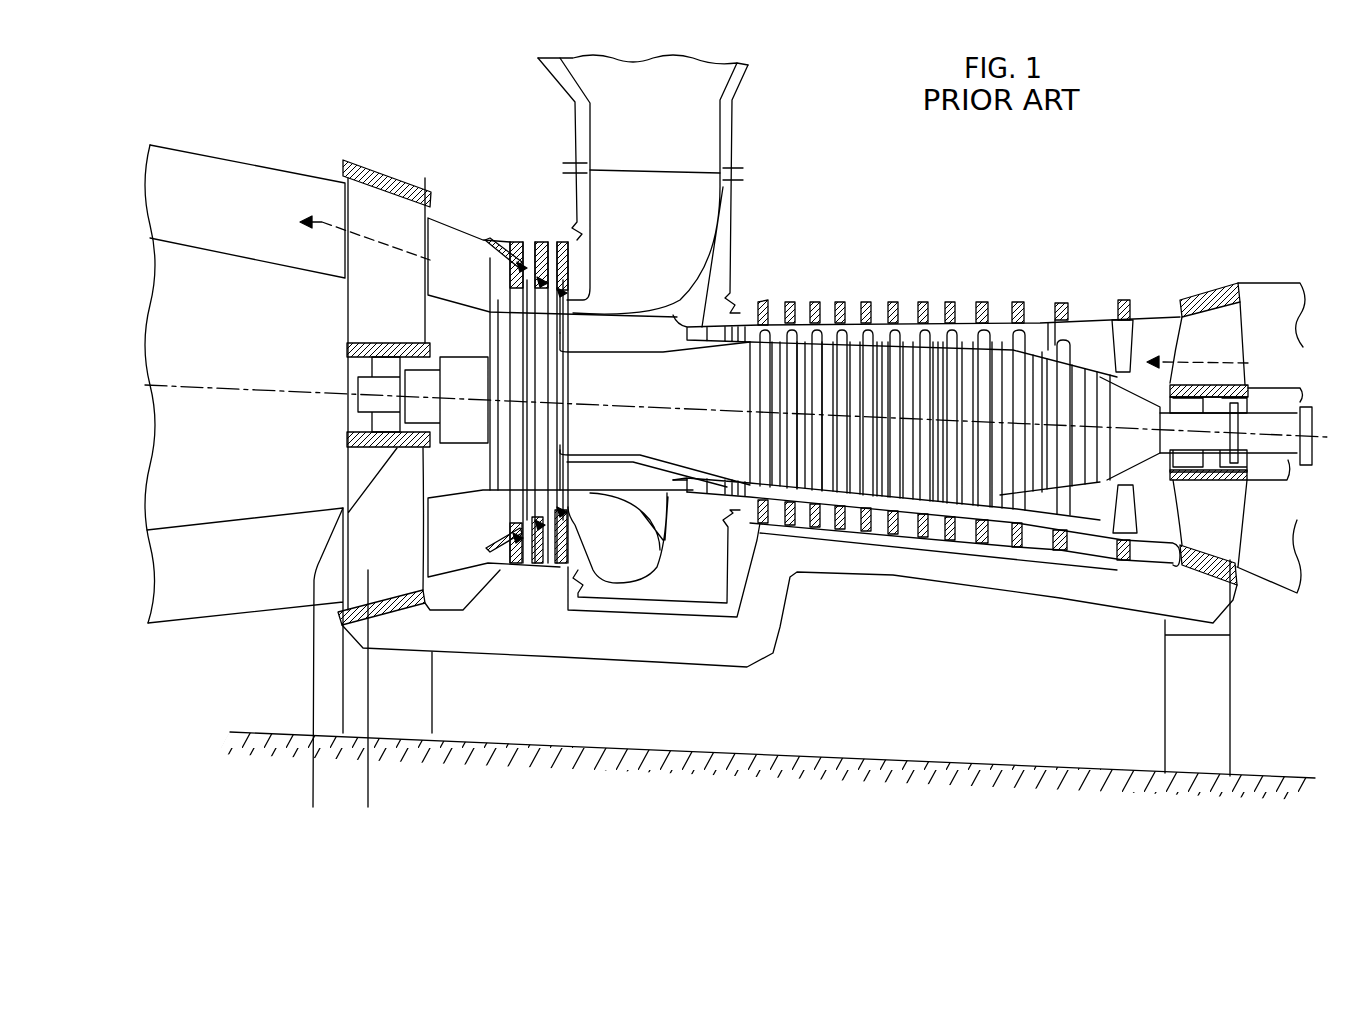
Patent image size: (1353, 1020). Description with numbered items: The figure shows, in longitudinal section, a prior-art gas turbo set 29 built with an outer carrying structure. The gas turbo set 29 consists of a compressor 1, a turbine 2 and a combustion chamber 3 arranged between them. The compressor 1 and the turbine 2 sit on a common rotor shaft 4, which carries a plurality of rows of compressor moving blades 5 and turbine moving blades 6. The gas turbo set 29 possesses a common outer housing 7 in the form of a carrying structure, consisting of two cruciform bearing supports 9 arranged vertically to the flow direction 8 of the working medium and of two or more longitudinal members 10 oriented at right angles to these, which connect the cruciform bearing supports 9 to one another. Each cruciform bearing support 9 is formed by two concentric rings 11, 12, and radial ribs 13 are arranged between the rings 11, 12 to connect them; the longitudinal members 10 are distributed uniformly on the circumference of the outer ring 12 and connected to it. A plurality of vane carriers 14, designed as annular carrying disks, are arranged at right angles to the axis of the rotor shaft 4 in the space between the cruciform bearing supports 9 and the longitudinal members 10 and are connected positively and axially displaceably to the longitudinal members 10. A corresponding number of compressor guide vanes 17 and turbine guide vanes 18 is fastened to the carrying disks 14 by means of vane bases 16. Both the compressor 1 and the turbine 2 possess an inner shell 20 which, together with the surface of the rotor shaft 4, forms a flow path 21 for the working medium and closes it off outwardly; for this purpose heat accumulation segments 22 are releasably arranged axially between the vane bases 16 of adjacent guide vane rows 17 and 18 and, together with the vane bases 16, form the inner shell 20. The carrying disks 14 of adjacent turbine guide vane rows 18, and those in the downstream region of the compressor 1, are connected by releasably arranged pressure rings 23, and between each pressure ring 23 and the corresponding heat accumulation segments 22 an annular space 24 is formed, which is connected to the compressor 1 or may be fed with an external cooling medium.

The compressor 1 is at (998, 380).
The turbine 2 is at (515, 370).
The combustion chamber 3 is at (652, 143).
The rotor shaft 4 is at (639, 398).
The compressor moving blades 5 is at (1042, 343).
The turbine moving blades 6 is at (528, 307).
The outer housing 7 is at (658, 663).
The flow direction 8 is at (1163, 362).
The cruciform bearing supports 9 is at (1213, 340).
The longitudinal members 10 is at (730, 640).
The inner ring 11 is at (321, 672).
The outer ring 12 is at (412, 612).
The radial ribs 13 is at (391, 704).
The vane carriers 14 is at (922, 527).
The vane bases 16 is at (980, 527).
The compressor guide vanes 17 is at (1018, 545).
The turbine guide vanes 18 is at (558, 303).
The inner shell 20 is at (498, 570).
The flow path 21 is at (1050, 293).
The heat accumulation segments 22 is at (825, 567).
The pressure ring 23 is at (882, 330).
The annular space 24 is at (828, 323).
The gas turbo set 29 is at (1335, 704).